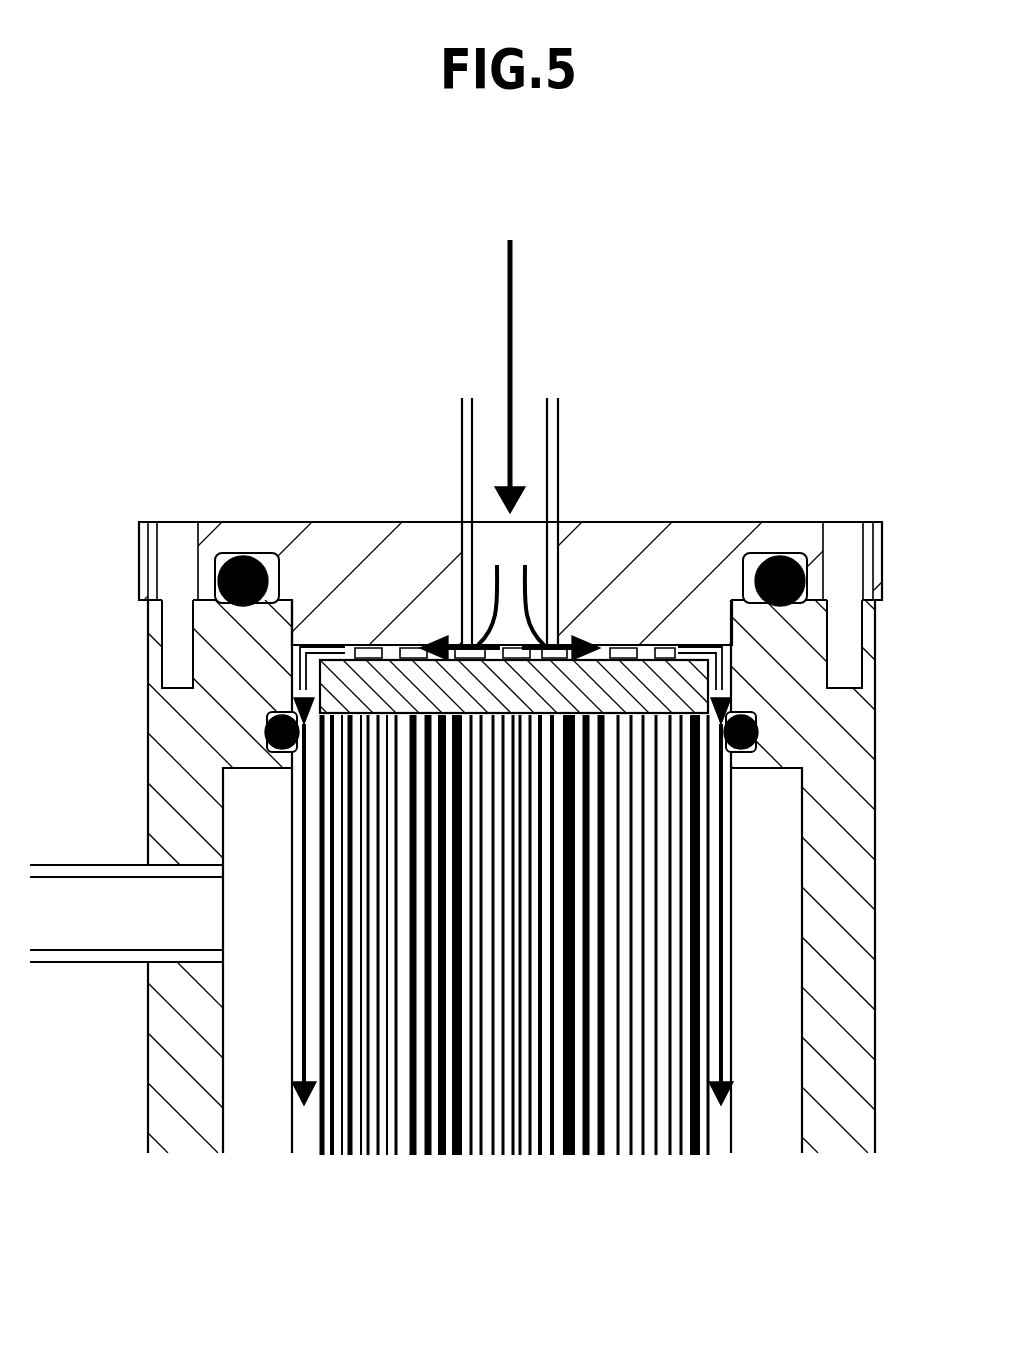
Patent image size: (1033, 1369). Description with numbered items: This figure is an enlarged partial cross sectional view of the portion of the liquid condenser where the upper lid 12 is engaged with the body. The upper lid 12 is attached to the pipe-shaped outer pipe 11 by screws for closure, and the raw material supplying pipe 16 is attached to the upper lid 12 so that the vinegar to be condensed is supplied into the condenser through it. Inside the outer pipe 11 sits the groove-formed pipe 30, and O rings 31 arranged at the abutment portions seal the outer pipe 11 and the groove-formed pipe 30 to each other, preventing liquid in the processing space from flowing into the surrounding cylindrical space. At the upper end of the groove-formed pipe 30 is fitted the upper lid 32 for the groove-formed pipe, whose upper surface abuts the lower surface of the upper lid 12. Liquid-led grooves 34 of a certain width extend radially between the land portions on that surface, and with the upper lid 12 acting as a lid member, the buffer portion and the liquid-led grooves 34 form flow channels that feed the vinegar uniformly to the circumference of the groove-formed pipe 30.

The outer pipe 11 is at (858, 782).
The upper lid 12 is at (223, 537).
The raw material supplying pipe 16 is at (558, 462).
The groove-formed pipe 30 is at (728, 1118).
The O ring 31 is at (780, 553).
The upper lid for the groove-formed pipe 32 is at (425, 665).
The liquid-led groove 34 is at (377, 653).